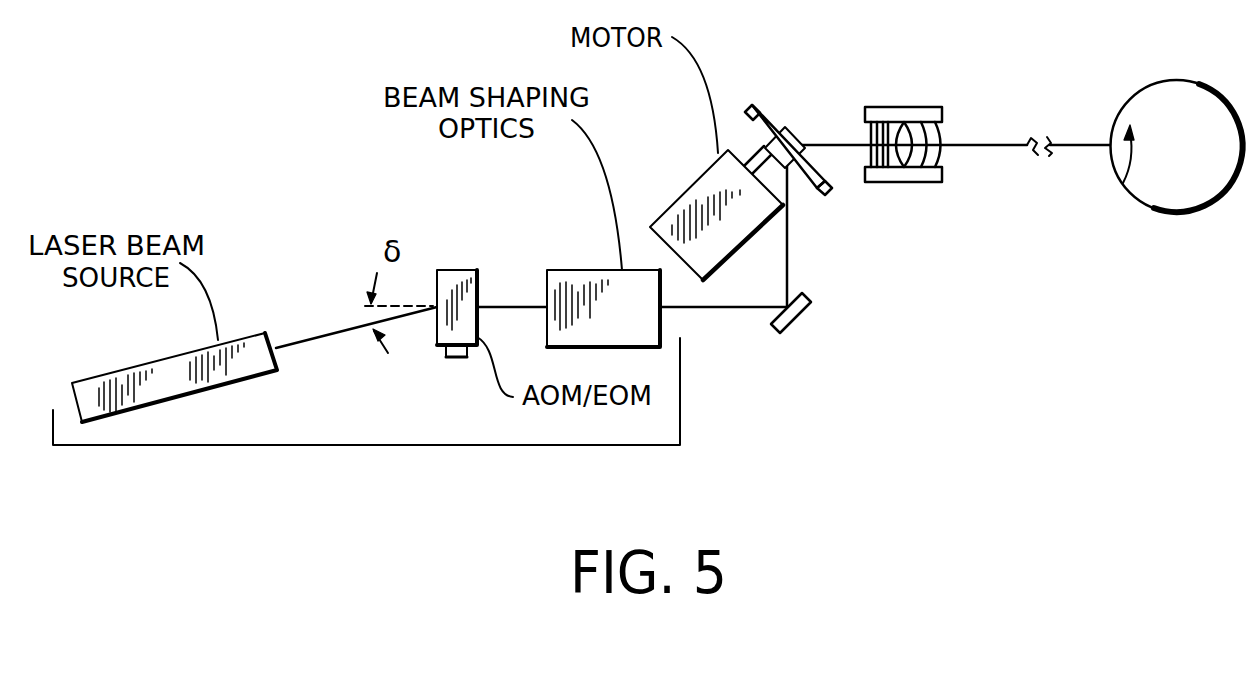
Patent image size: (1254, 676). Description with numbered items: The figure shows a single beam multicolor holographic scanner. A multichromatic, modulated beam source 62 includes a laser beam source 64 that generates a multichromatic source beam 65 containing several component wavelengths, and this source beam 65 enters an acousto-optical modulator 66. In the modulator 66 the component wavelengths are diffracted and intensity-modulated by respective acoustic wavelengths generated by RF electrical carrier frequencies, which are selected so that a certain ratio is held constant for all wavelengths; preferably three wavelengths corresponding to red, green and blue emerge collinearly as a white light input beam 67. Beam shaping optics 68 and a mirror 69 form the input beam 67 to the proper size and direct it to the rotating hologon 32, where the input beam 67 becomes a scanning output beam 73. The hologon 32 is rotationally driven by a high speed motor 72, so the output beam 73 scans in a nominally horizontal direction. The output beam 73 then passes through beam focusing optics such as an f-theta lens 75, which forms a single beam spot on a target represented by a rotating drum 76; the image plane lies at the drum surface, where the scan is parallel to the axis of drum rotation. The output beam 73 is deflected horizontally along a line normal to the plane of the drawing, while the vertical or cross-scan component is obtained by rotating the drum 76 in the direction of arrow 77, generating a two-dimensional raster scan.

The hologon 32 is at (767, 113).
The modulated beam source 62 is at (362, 445).
The laser beam source 64 is at (173, 353).
The source beam 65 is at (322, 330).
The acousto-optical modulator 66 is at (455, 270).
The white light input beam 67 is at (503, 303).
The beam shaping optics 68 is at (603, 270).
The mirror 69 is at (790, 320).
The motor 72 is at (702, 170).
The output beam 73 is at (1013, 143).
The f-theta lens 75 is at (902, 107).
The rotating drum 76 is at (1143, 92).
The arrow 77 is at (1123, 183).